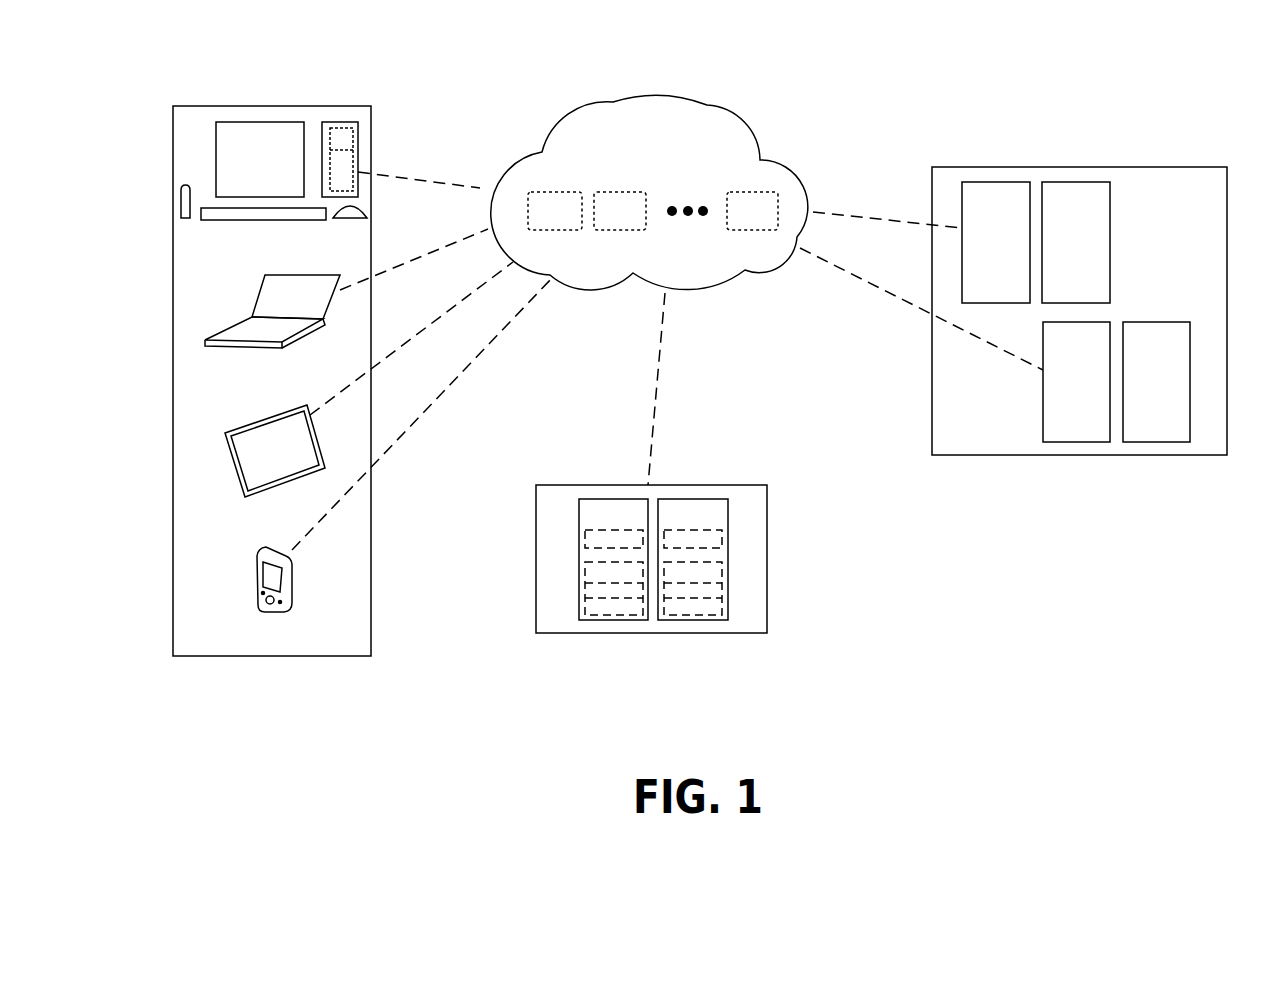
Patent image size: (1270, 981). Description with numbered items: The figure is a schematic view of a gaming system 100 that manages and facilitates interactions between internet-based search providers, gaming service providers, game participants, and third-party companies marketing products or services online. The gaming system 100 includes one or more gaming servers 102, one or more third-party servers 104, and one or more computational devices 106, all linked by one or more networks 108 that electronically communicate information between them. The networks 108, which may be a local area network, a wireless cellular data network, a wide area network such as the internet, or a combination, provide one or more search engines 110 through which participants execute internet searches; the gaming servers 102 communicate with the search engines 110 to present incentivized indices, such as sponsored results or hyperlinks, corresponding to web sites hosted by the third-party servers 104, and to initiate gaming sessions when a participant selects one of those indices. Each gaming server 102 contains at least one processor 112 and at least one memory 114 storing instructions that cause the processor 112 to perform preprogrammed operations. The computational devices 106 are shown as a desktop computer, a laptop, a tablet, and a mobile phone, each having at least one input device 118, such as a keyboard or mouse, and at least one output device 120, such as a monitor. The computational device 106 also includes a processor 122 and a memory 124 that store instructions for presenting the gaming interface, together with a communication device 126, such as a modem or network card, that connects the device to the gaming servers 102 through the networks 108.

The gaming system 100 is at (890, 80).
The gaming server 102 is at (737, 633).
The third-party server 104 is at (1180, 455).
The computational device 106 is at (192, 124).
The network 108 is at (655, 110).
The search engine 110 is at (753, 213).
The processor 112 is at (622, 537).
The memory 114 is at (622, 588).
The input device 118 is at (350, 213).
The output device 120 is at (257, 145).
The processor 122 is at (343, 137).
The memory 124 is at (345, 165).
The communication device 126 is at (187, 197).